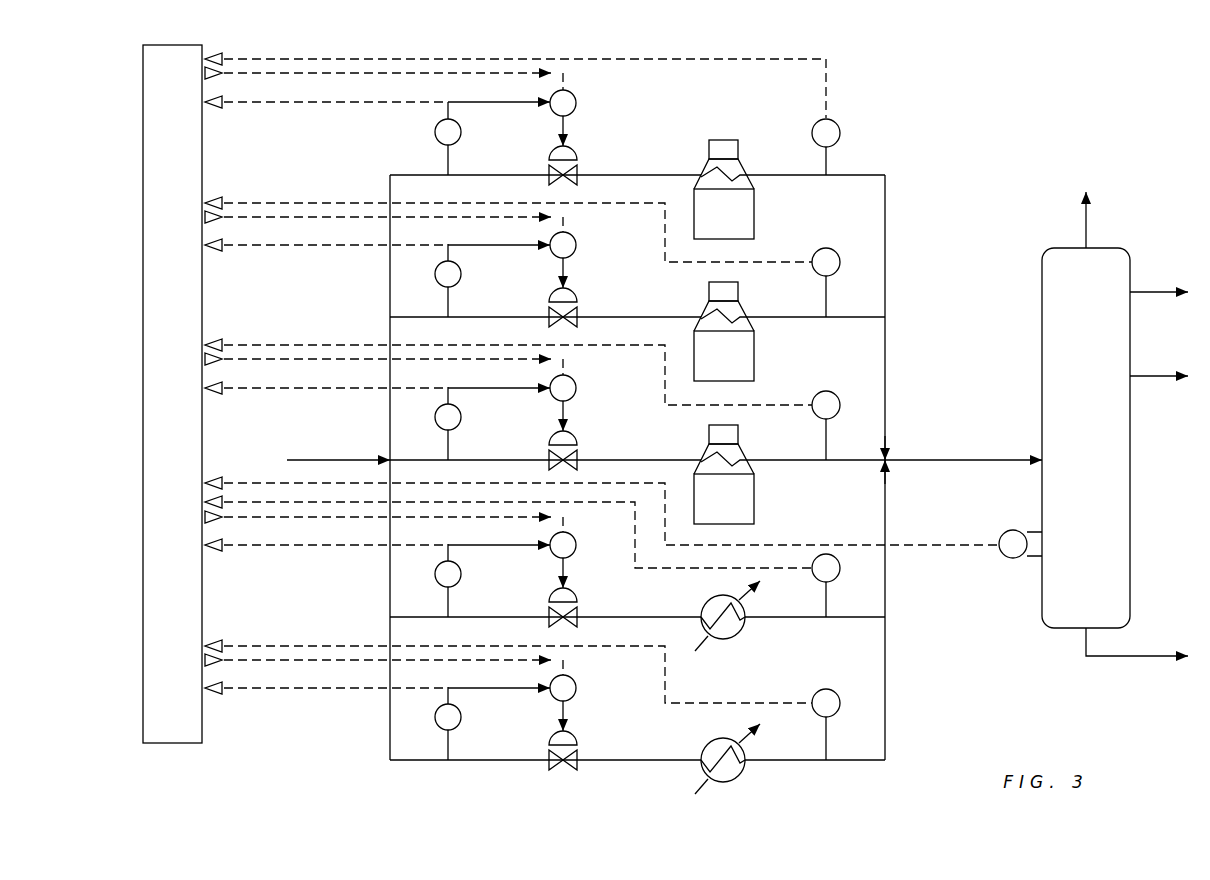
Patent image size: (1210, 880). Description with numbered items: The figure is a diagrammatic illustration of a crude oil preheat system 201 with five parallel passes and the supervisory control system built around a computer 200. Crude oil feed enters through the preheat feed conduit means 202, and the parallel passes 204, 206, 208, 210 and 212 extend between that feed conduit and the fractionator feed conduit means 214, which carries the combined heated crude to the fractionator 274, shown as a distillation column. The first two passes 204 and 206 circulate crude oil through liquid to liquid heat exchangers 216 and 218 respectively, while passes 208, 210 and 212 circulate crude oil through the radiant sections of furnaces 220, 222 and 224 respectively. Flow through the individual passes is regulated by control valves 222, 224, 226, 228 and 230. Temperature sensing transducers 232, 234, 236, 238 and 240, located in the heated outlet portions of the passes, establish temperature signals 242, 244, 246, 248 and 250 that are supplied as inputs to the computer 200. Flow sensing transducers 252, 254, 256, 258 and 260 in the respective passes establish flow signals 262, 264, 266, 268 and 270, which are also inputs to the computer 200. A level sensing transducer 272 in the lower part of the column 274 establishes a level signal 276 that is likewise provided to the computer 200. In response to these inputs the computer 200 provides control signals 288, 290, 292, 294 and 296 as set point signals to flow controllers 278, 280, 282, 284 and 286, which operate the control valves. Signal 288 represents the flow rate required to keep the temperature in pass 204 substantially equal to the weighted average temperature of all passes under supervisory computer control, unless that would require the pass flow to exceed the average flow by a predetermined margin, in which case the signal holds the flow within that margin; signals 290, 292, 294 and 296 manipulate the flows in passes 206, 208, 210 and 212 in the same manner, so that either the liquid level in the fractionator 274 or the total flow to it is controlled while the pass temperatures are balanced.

The computer 200 is at (204, 725).
The preheat system 201 is at (364, 769).
The preheat feed conduit means 202 is at (350, 458).
The parallel pass 204 is at (603, 759).
The parallel pass 206 is at (663, 615).
The parallel pass 208 is at (668, 458).
The parallel pass 210 is at (665, 316).
The parallel pass 212 is at (497, 174).
The fractionator feed conduit means 214 is at (953, 458).
The liquid to liquid heat exchanger 216 is at (706, 747).
The liquid to liquid heat exchanger 218 is at (723, 641).
The furnace 220 is at (755, 495).
The furnace / control valve 222 is at (755, 350).
The furnace / control valve 224 is at (755, 210).
The control valve 226 is at (581, 446).
The control valve 228 is at (581, 303).
The control valve 230 is at (581, 161).
The temperature sensing transducer 232 is at (826, 688).
The temperature sensing transducer 234 is at (815, 578).
The temperature sensing transducer 236 is at (814, 415).
The temperature sensing transducer 238 is at (836, 250).
The temperature sensing transducer 240 is at (836, 122).
The temperature signal 242 is at (258, 644).
The temperature signal 244 is at (608, 505).
The temperature signal 246 is at (317, 343).
The temperature signal 248 is at (317, 201).
The temperature signal 250 is at (740, 62).
The flow sensing transducer 252 is at (461, 717).
The flow sensing transducer 254 is at (460, 583).
The flow sensing transducer 256 is at (461, 417).
The flow sensing transducer 258 is at (461, 274).
The flow sensing transducer 260 is at (435, 132).
The flow signal 262 is at (323, 690).
The flow signal 264 is at (323, 547).
The flow signal 266 is at (258, 390).
The flow signal 268 is at (258, 247).
The flow signal 270 is at (258, 104).
The level sensing transducer 272 is at (1001, 558).
The fractionator 274 is at (1130, 432).
The level signal 276 is at (843, 544).
The flow controller 278 is at (577, 688).
The flow controller 280 is at (553, 559).
The flow controller 282 is at (577, 388).
The flow controller 284 is at (577, 245).
The flow controller 286 is at (577, 103).
The control signal 288 is at (300, 660).
The control signal 290 is at (243, 518).
The control signal 292 is at (341, 360).
The control signal 294 is at (341, 218).
The control signal 296 is at (341, 74).